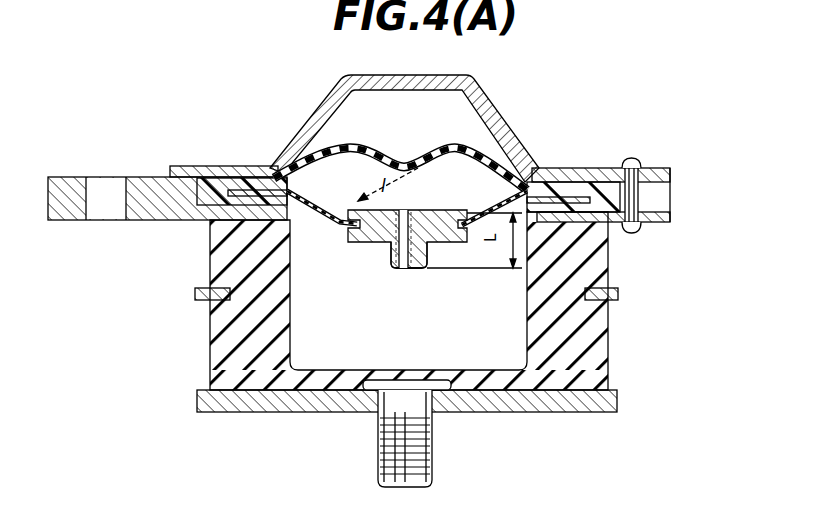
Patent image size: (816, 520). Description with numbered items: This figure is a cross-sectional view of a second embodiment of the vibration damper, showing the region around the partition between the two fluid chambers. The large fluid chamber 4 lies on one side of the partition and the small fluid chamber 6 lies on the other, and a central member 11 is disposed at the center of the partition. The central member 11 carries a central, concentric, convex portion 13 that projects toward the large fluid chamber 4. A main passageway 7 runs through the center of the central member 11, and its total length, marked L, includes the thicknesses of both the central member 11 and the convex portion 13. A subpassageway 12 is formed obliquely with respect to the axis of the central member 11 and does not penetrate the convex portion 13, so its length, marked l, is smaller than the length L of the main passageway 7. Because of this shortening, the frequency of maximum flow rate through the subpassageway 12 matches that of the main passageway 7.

The large fluid chamber 4 is at (490, 357).
The small fluid chamber 6 is at (470, 173).
The main passageway 7 is at (401, 269).
The central member 11 is at (465, 211).
The subpassageway 12 is at (408, 221).
The convex portion 13 is at (421, 268).